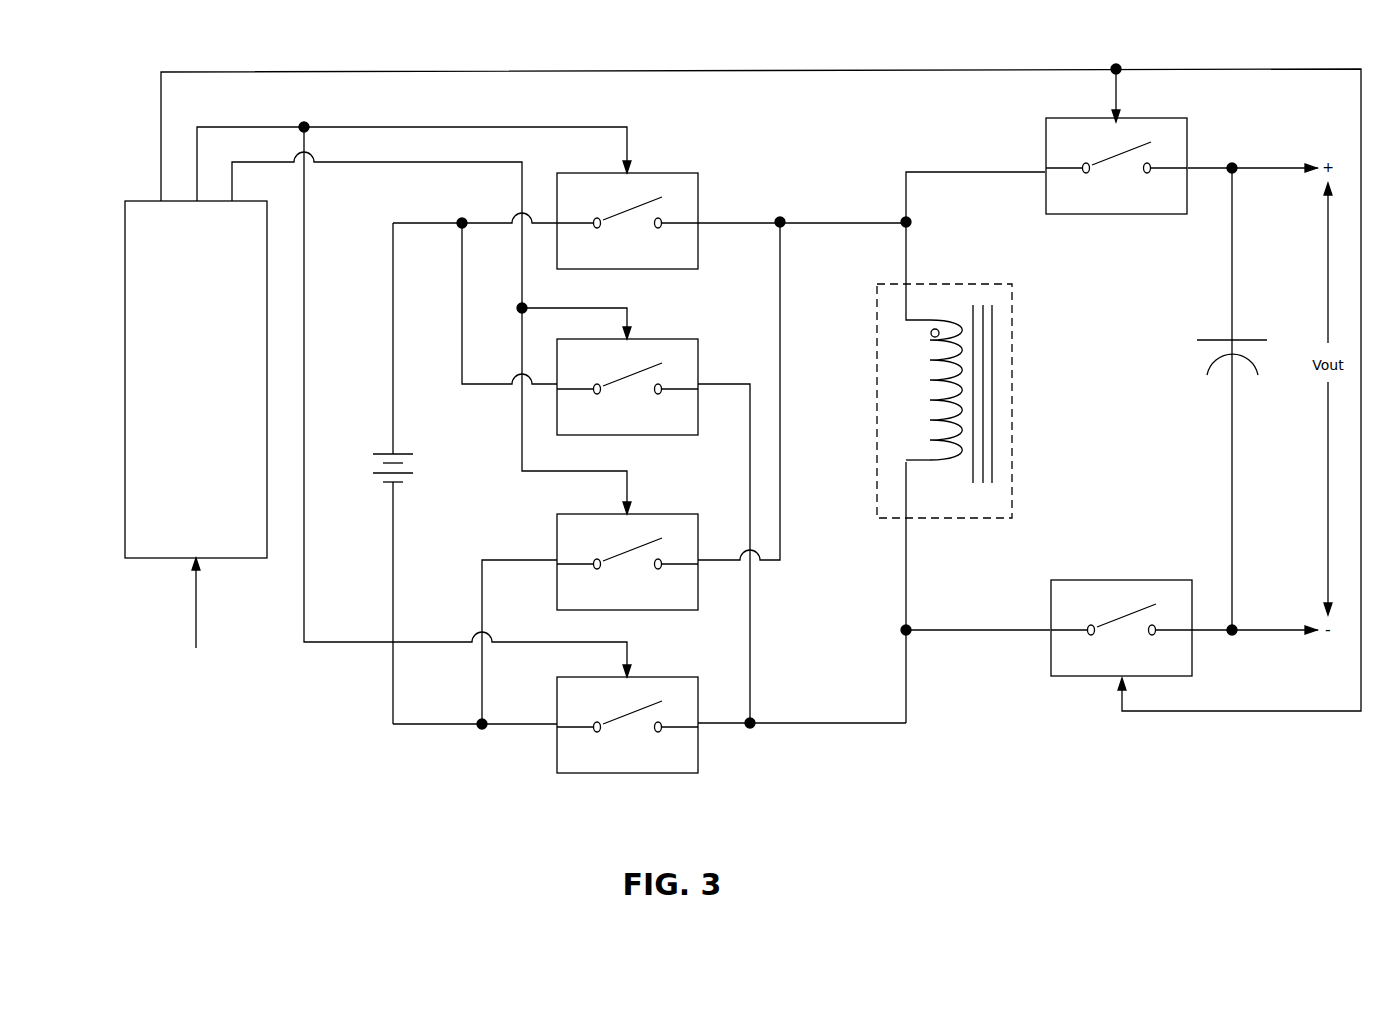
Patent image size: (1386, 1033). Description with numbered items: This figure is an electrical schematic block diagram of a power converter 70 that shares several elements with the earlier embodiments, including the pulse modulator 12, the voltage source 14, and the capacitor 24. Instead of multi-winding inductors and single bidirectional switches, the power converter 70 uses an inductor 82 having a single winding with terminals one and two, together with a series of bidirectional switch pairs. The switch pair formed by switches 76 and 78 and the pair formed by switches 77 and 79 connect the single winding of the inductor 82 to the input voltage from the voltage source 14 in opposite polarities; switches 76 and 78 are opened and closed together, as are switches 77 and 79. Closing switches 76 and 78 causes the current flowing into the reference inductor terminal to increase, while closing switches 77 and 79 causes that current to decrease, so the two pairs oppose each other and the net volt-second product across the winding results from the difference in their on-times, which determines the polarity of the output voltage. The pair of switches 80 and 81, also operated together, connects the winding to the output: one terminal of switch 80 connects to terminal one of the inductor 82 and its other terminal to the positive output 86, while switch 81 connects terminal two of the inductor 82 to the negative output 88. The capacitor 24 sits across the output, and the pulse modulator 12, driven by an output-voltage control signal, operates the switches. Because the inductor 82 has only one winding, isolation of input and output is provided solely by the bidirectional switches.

The power converter 70 is at (856, 49).
The pulse modulator 12 is at (184, 442).
The voltage source 14 is at (407, 484).
The bidirectional switch S1 76 is at (615, 263).
The bidirectional switch S2 77 is at (615, 426).
The bidirectional switch S4 79 is at (615, 603).
The bidirectional switch S3 78 is at (615, 765).
The bidirectional switch S5 80 is at (1110, 208).
The bidirectional switch S6 81 is at (1114, 669).
The inductor 82 is at (949, 521).
The capacitor 24 is at (1252, 338).
The positive output 86 is at (1311, 153).
The negative output terminal 88 is at (1318, 650).